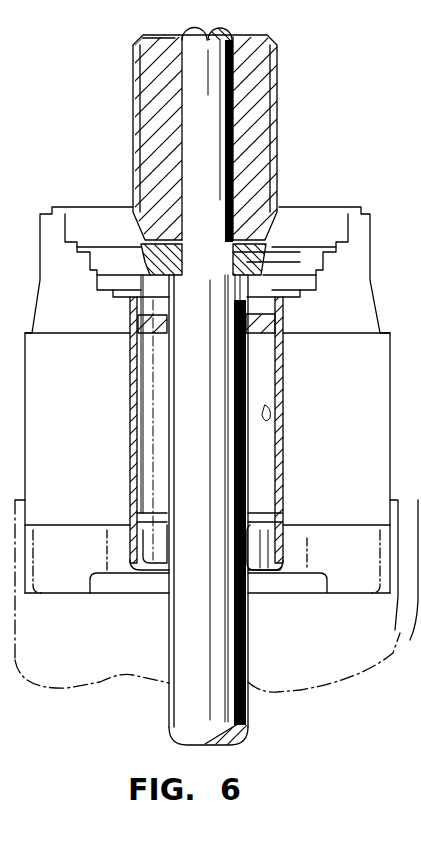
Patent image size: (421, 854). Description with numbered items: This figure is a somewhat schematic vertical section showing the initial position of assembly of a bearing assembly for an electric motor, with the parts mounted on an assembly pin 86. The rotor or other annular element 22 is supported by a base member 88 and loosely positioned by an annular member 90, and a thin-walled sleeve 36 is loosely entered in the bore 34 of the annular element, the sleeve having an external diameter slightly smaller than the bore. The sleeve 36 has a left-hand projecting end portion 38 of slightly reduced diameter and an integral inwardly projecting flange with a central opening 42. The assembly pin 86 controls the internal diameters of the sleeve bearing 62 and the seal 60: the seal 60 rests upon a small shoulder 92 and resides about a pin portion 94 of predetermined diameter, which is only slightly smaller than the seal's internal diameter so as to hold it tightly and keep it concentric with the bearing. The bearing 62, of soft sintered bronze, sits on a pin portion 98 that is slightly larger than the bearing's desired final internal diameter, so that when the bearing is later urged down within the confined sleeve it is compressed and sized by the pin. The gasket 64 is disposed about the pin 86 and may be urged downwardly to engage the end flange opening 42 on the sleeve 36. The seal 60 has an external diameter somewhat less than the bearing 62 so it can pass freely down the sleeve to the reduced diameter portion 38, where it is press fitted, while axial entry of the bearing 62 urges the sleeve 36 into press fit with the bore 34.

The rotor 22 is at (355, 425).
The bore 34 is at (268, 420).
The sleeve 36 is at (280, 372).
The projecting end portion 38 is at (277, 542).
The central opening 42 is at (262, 564).
The seal 60 is at (275, 218).
The sleeve bearing 62 is at (272, 170).
The gasket 64 is at (277, 328).
The assembly pin 86 is at (220, 97).
The base member 88 is at (140, 580).
The annular member 90 is at (68, 543).
The shoulder 92 is at (283, 262).
The pin portion 94 is at (212, 240).
The pin portion 98 is at (238, 118).